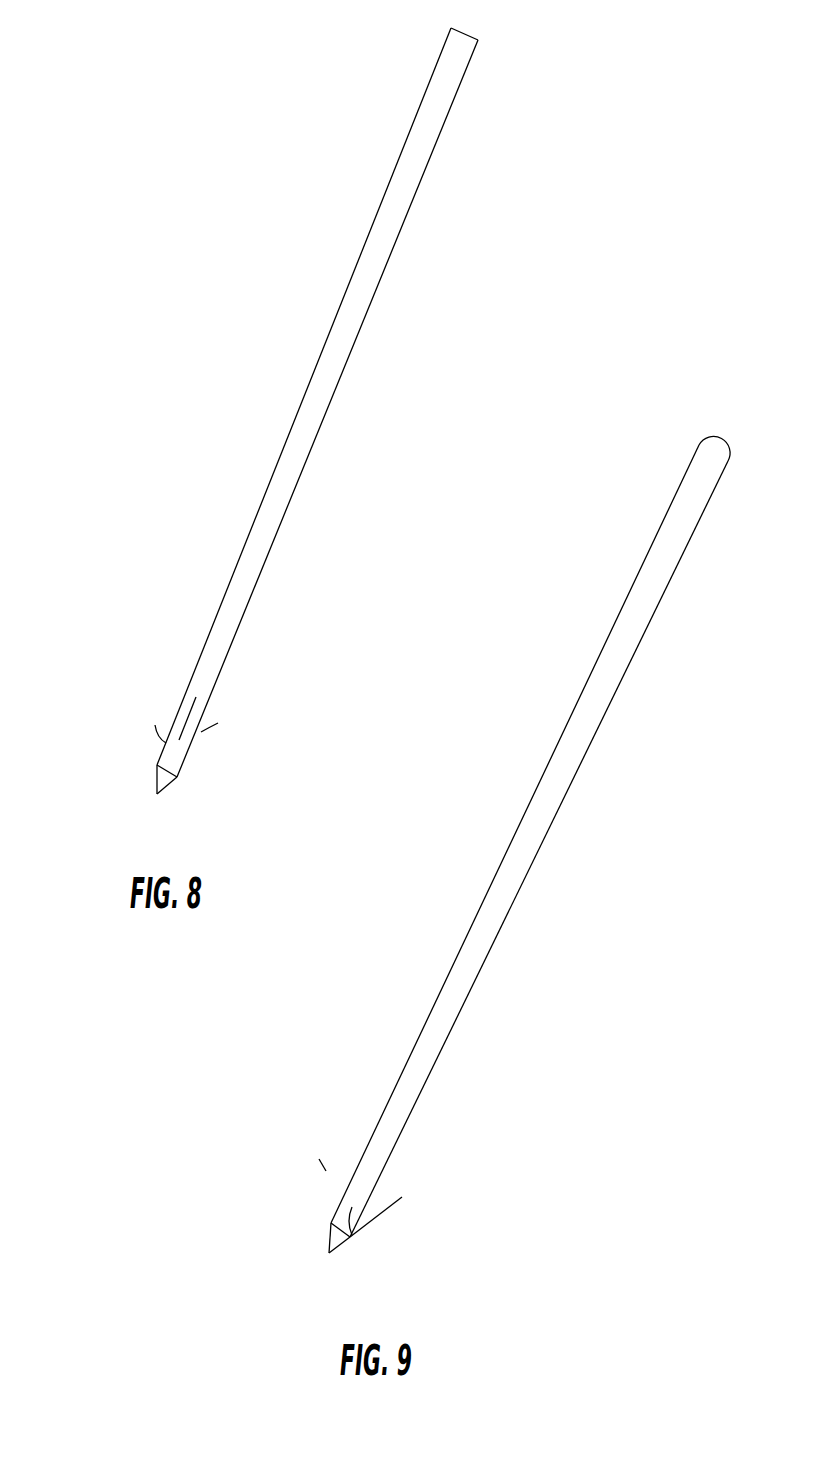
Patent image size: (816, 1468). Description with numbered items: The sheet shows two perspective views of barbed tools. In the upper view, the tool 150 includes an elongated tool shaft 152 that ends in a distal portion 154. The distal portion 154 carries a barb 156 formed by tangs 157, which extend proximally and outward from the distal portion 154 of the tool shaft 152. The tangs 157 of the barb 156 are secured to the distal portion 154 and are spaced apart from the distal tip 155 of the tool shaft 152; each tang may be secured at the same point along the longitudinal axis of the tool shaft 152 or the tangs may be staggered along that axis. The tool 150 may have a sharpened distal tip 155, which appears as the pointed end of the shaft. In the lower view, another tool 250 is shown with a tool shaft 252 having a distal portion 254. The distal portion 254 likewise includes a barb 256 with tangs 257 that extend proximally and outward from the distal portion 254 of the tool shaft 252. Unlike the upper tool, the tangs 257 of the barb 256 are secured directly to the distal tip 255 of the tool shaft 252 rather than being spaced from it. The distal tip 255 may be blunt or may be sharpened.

In FIG. 8, the tool 150 is at (372, 392).
In FIG. 8, the tool shaft 152 is at (248, 575).
In FIG. 8, the distal portion 154 is at (173, 712).
In FIG. 8, the distal tip 155 is at (158, 792).
In FIG. 8, the barb 156 is at (210, 767).
In FIG. 8, the tangs 157 is at (200, 738).
In FIG. 9, the tool 250 is at (643, 785).
In FIG. 9, the tool shaft 252 is at (480, 955).
In FIG. 9, the distal portion 254 is at (396, 1146).
In FIG. 9, the distal tip 255 is at (351, 1237).
In FIG. 9, the barb 256 is at (398, 1218).
In FIG. 9, the tangs 257 is at (329, 1222).